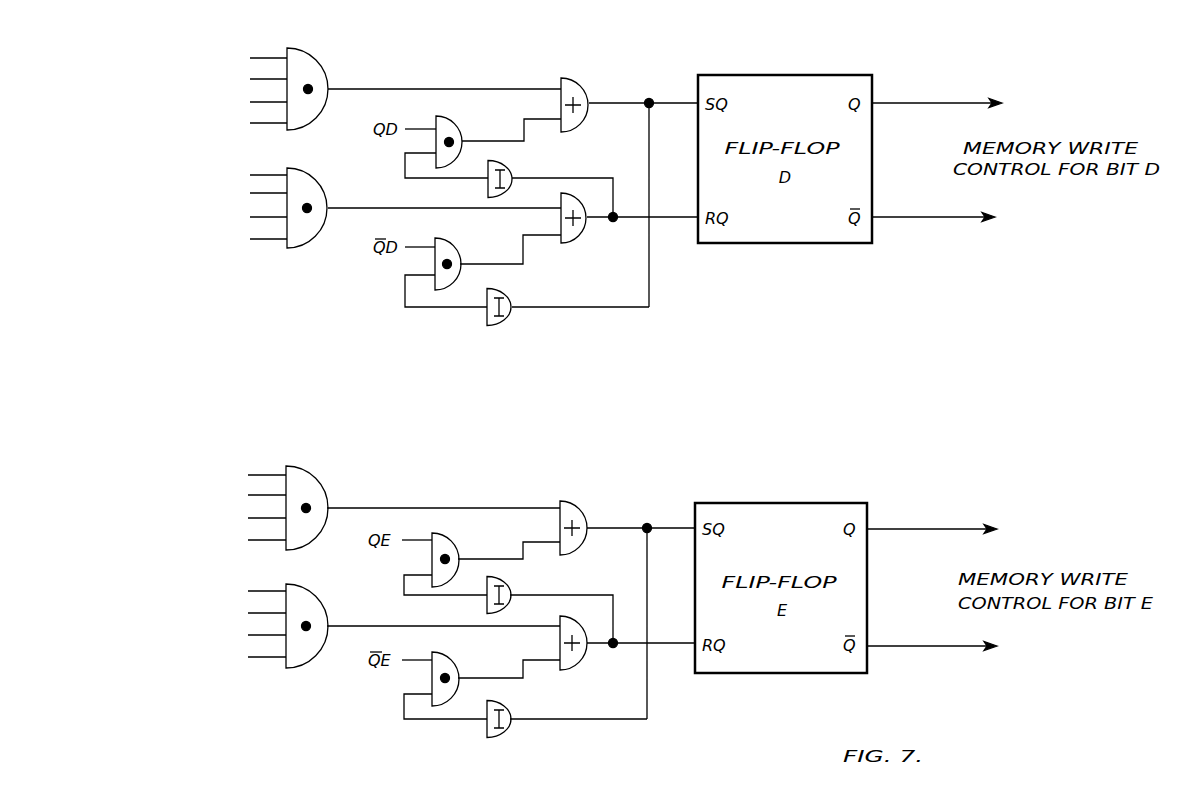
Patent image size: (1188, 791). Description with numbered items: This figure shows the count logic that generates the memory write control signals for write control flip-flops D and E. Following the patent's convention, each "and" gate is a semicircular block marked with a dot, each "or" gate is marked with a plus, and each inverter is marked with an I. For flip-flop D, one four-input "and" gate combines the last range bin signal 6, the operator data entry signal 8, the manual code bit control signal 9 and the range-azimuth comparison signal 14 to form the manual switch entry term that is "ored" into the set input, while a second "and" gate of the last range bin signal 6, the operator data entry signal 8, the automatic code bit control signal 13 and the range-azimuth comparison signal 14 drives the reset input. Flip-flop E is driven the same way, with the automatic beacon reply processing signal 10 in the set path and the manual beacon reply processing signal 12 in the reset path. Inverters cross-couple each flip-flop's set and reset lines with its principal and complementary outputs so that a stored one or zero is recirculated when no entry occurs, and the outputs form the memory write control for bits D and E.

The last range bin signal 6 is at (249, 325).
The operator data entry signal 8 is at (249, 346).
The manual code bit control signal 9 is at (249, 102).
The automatic beacon reply processing signal 10 is at (250, 518).
The manual beacon reply processing signal 12 is at (250, 635).
The automatic code bit control signal 13 is at (251, 217).
The range-azimuth comparison signal 14 is at (249, 390).